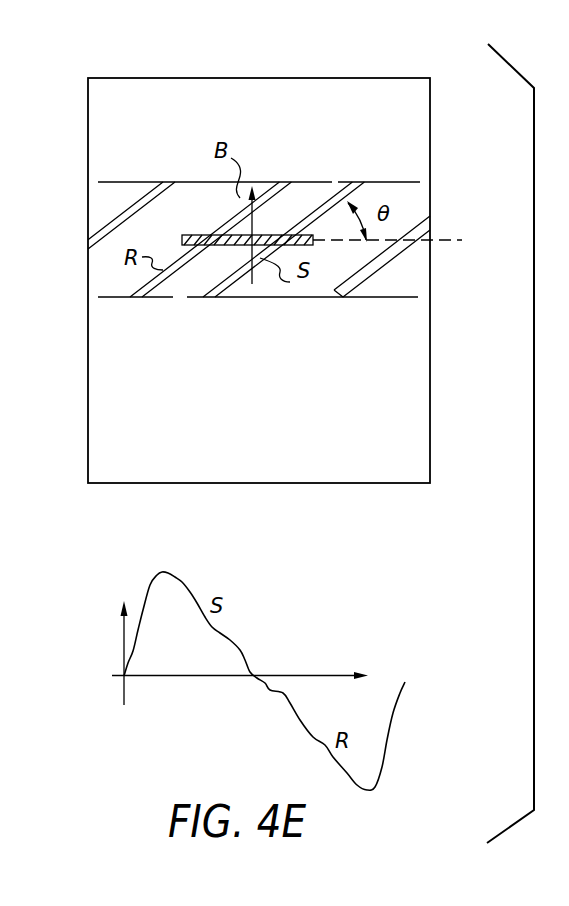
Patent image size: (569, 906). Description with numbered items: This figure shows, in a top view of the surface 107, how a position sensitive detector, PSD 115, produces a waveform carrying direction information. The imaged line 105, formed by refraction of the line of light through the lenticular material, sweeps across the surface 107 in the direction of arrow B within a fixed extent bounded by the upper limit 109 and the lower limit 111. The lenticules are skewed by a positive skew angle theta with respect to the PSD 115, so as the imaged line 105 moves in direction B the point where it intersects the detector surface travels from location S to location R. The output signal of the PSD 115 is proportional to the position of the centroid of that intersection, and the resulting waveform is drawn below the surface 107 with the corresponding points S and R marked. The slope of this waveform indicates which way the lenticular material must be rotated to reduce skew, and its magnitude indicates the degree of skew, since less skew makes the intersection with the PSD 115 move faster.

The imaged line 105 is at (230, 282).
The surface 107 is at (142, 88).
The upper limit 109 is at (272, 182).
The lower limit 111 is at (370, 297).
The PSD 115 is at (182, 236).